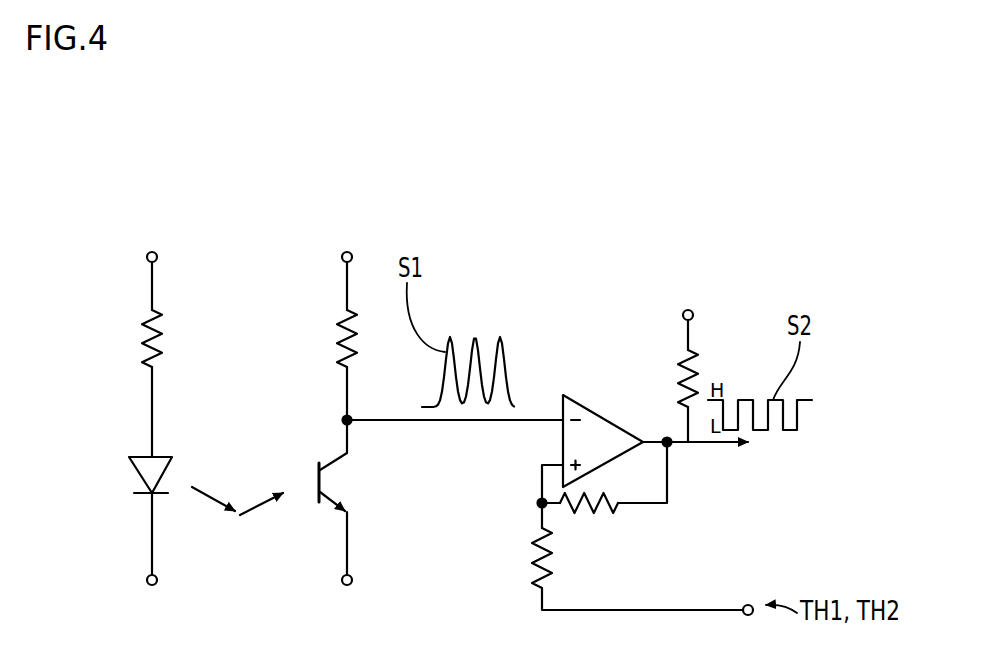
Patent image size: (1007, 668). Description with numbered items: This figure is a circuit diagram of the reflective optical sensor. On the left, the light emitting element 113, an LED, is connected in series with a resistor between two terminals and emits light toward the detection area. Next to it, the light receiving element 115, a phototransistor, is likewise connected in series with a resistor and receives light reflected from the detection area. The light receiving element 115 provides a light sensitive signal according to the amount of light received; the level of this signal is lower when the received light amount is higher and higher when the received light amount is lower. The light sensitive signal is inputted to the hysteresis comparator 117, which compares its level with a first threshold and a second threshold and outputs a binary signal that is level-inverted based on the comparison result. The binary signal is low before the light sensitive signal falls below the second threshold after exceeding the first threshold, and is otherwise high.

The light emitting element 113 is at (140, 457).
The light receiving element 115 is at (333, 464).
The hysteresis comparator 117 is at (598, 432).